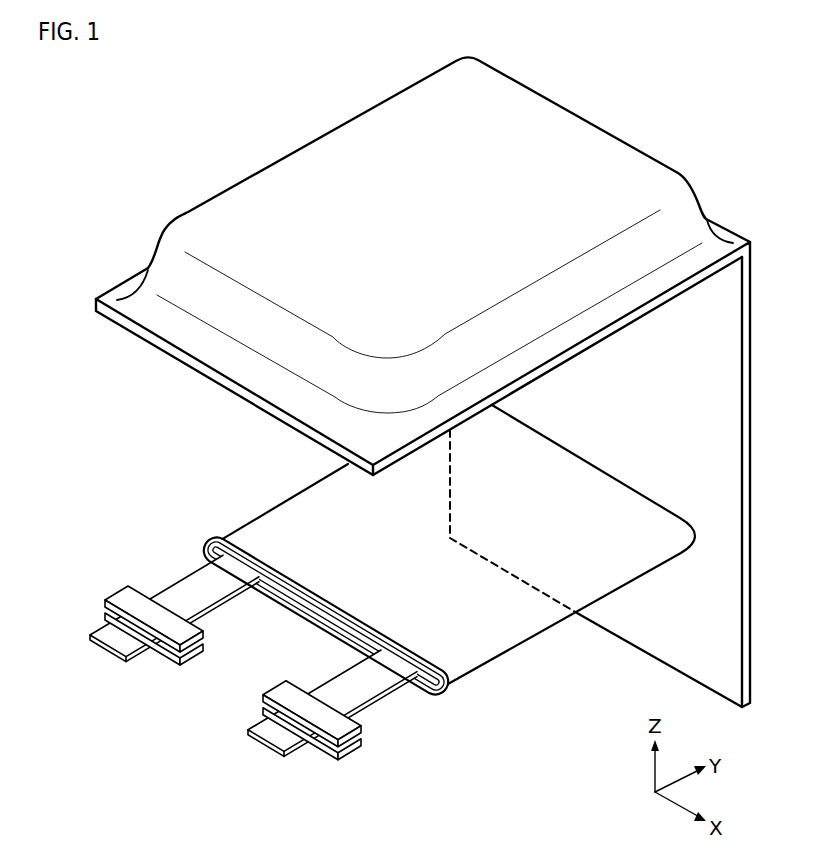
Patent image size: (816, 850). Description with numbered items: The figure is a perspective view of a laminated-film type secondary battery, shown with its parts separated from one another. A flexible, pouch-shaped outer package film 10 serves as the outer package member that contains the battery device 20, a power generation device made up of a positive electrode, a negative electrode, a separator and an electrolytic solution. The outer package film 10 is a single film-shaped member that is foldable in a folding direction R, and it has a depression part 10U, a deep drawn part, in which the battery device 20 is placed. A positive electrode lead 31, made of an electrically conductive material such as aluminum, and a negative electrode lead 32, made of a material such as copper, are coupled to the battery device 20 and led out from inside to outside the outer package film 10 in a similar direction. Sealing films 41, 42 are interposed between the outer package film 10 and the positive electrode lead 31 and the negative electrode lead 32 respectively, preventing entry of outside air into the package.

The outer package film 10 is at (570, 133).
The depression part 10U is at (320, 170).
The battery device 20 is at (521, 668).
The positive electrode lead 31 is at (115, 640).
The negative electrode lead 32 is at (275, 733).
The sealing film 41 is at (122, 598).
The sealing film 42 is at (360, 738).
The folding direction R is at (705, 412).